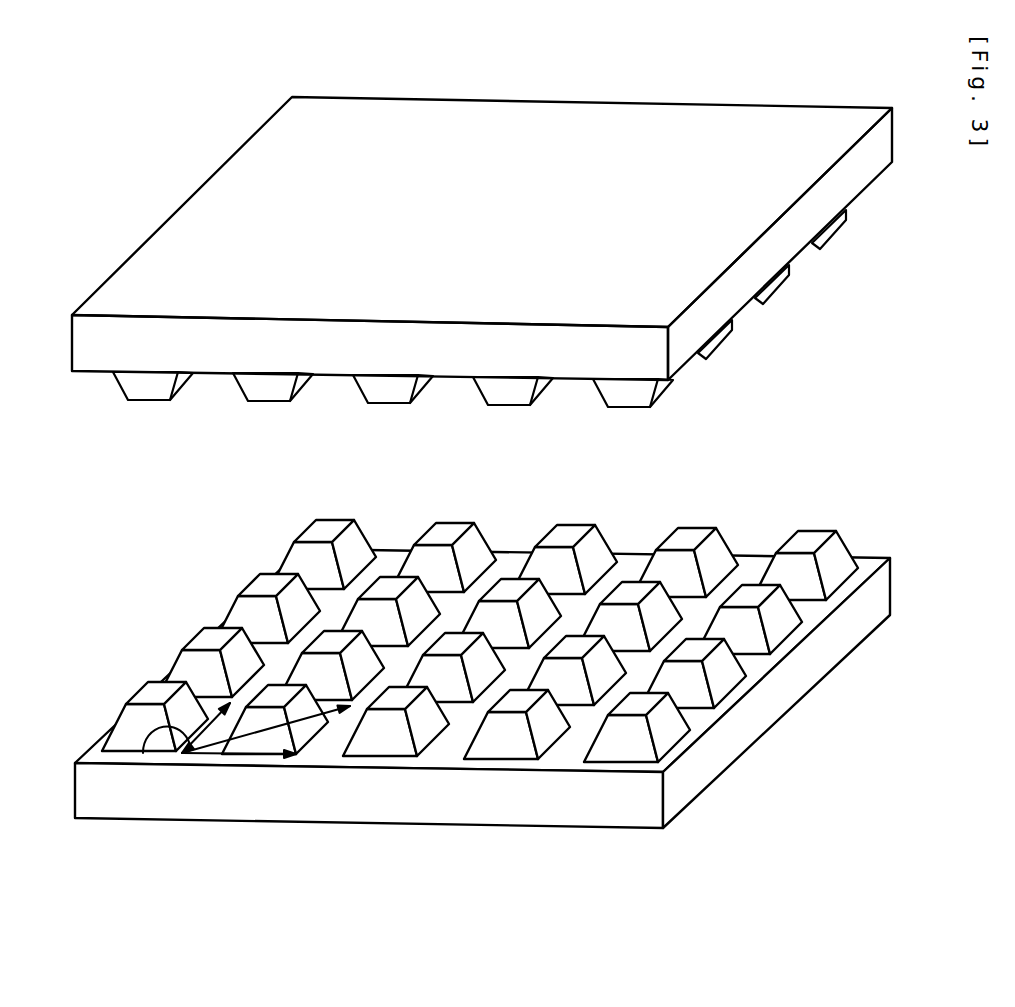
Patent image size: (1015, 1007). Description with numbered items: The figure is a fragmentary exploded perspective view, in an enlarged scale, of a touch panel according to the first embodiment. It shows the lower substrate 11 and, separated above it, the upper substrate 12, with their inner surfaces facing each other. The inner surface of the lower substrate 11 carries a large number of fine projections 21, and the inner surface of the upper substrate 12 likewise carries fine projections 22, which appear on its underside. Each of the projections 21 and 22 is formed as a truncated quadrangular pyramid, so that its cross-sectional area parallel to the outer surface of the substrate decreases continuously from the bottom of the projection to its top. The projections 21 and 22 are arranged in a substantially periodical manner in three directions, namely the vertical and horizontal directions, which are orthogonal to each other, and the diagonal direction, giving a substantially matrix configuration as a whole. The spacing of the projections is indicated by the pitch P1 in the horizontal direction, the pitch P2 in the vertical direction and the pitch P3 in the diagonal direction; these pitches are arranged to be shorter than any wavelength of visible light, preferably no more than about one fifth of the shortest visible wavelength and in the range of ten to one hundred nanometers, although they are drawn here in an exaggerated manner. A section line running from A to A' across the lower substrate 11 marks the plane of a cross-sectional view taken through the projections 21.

The lower substrate 11 is at (470, 790).
The upper substrate 12 is at (310, 160).
The projections 21 is at (242, 580).
The projections 22 is at (138, 400).
The pitch P1 is at (235, 753).
The pitch P2 is at (143, 753).
The pitch P3 is at (307, 717).
The section line A is at (108, 658).
The section line A' is at (812, 682).